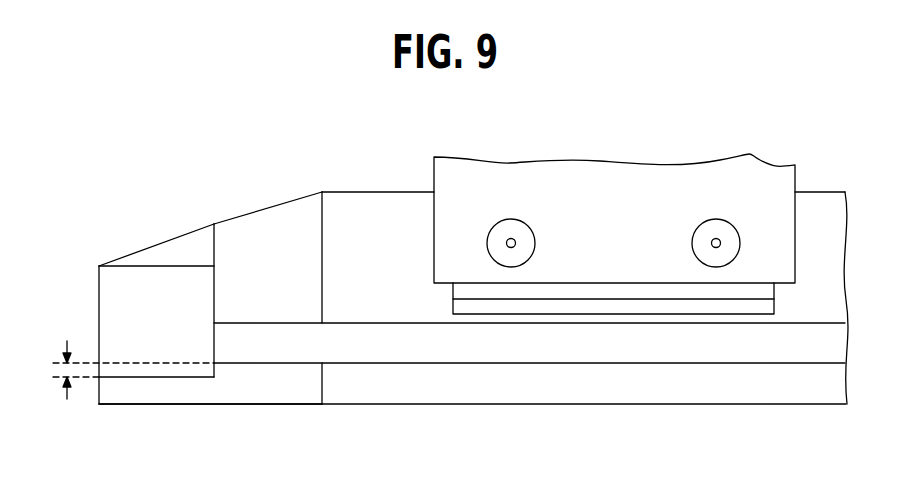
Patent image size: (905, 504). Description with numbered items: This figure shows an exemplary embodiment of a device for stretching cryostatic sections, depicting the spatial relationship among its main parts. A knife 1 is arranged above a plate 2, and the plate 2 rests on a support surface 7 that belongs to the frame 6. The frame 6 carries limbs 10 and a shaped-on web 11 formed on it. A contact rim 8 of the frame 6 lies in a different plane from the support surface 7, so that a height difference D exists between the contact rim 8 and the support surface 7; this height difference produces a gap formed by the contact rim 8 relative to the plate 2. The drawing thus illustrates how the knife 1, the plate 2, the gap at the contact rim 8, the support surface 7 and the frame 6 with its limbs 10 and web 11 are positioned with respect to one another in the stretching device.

The knife 1 is at (751, 310).
The plate 2 is at (365, 352).
The frame 6 is at (375, 233).
The support surface 7 is at (283, 388).
The contact rim 8 is at (137, 385).
The limbs 10 is at (130, 289).
The shaped-on web 11 is at (208, 406).